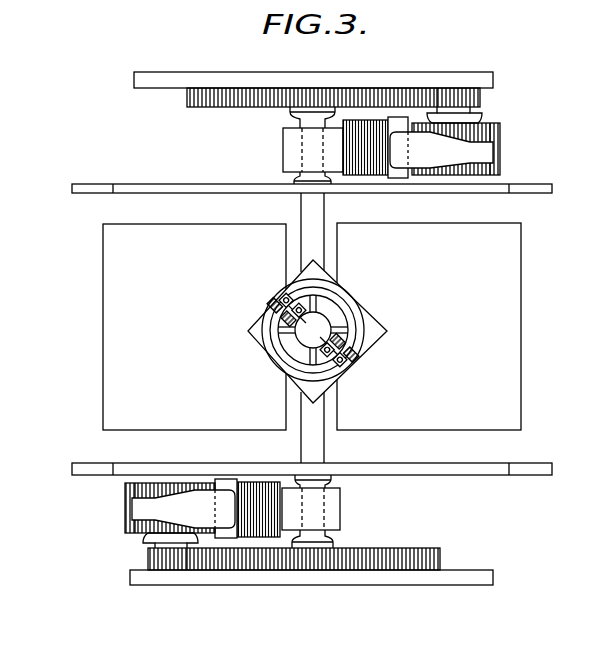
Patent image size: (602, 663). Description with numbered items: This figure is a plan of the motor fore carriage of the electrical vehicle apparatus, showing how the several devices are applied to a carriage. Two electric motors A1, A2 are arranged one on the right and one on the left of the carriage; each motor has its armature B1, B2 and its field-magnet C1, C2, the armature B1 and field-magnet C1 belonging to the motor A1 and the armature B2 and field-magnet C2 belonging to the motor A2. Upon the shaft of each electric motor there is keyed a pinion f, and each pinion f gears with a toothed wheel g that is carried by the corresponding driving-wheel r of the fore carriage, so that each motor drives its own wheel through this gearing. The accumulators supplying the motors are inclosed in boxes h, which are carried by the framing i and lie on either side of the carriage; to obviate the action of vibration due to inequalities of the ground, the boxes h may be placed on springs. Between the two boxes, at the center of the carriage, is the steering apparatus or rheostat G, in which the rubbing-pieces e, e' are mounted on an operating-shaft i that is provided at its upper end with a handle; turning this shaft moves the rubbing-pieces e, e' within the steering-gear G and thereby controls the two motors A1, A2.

The driving-wheel r is at (441, 80).
The toothed wheel g is at (262, 104).
The pinion f is at (480, 96).
The boxes h is at (312, 329).
The framing i is at (320, 326).
The field-magnet C1 is at (365, 141).
The field-magnet C2 is at (263, 525).
The armature B1 is at (497, 123).
The armature B2 is at (137, 532).
The electric motor A1 is at (497, 148).
The electric motor A2 is at (154, 509).
The steering apparatus or rheostat G is at (315, 331).
The rubbing-piece e is at (257, 324).
The rubbing-piece e' is at (355, 353).